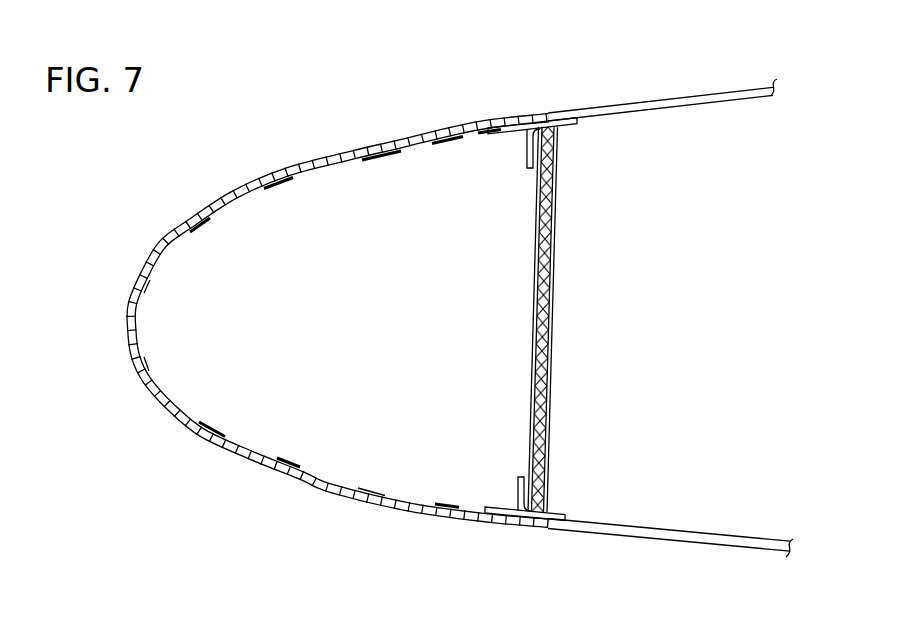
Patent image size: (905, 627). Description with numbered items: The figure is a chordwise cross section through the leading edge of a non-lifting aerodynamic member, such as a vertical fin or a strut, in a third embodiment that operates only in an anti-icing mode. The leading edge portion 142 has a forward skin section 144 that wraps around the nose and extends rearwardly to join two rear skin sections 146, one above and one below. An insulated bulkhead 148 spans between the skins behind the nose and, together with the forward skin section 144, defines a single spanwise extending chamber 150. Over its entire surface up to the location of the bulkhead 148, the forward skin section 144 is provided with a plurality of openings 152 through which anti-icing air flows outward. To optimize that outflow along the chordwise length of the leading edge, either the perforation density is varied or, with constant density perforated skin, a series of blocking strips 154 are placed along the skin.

The leading edge portion 142 is at (207, 461).
The forward skin section 144 is at (126, 327).
The rear skin sections 146 is at (643, 100).
The insulated bulkhead 148 is at (537, 225).
The spanwise extending chamber 150 is at (299, 307).
The openings 152 is at (182, 230).
The blocking strips 154 is at (287, 190).